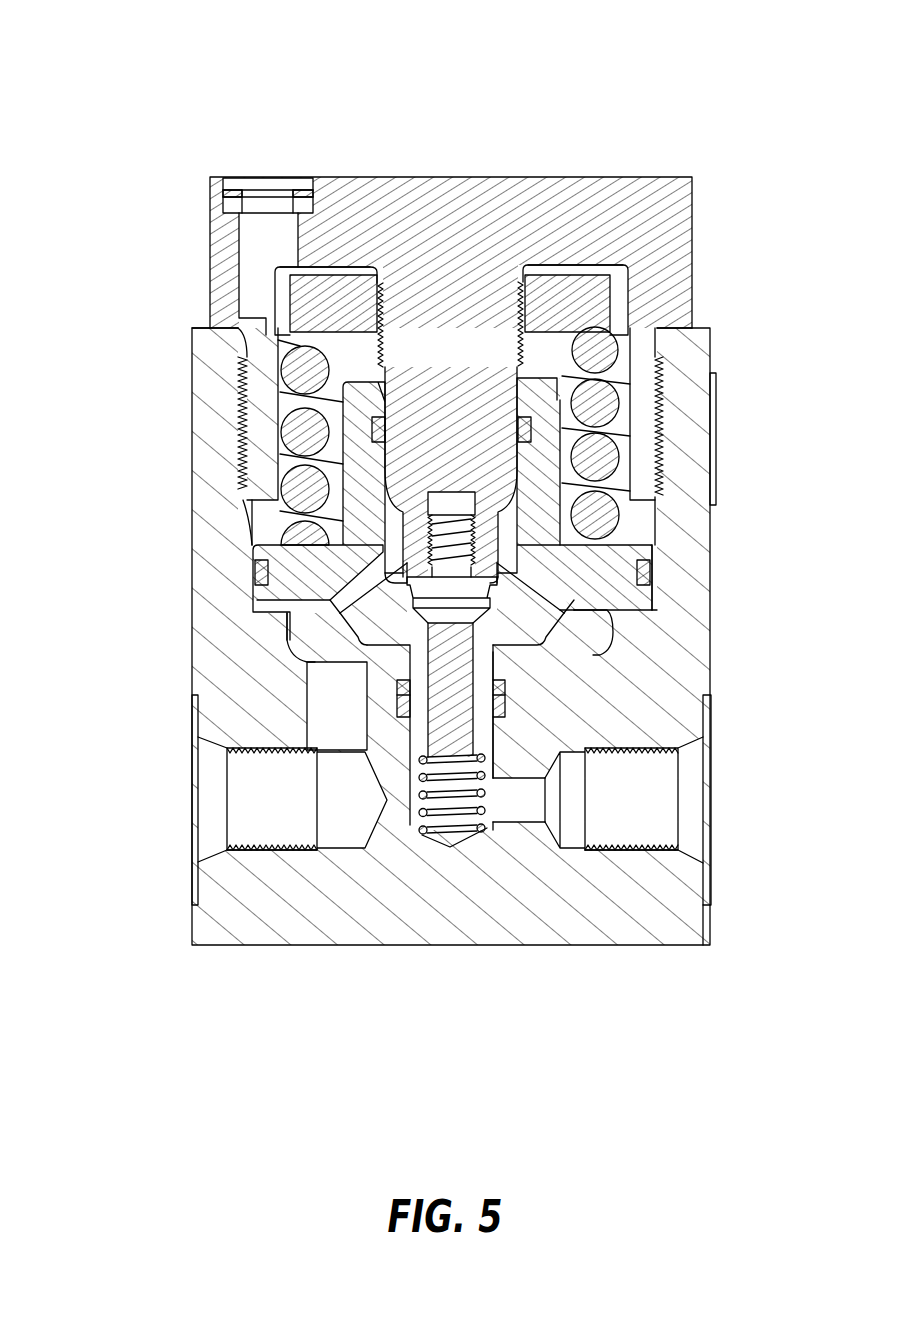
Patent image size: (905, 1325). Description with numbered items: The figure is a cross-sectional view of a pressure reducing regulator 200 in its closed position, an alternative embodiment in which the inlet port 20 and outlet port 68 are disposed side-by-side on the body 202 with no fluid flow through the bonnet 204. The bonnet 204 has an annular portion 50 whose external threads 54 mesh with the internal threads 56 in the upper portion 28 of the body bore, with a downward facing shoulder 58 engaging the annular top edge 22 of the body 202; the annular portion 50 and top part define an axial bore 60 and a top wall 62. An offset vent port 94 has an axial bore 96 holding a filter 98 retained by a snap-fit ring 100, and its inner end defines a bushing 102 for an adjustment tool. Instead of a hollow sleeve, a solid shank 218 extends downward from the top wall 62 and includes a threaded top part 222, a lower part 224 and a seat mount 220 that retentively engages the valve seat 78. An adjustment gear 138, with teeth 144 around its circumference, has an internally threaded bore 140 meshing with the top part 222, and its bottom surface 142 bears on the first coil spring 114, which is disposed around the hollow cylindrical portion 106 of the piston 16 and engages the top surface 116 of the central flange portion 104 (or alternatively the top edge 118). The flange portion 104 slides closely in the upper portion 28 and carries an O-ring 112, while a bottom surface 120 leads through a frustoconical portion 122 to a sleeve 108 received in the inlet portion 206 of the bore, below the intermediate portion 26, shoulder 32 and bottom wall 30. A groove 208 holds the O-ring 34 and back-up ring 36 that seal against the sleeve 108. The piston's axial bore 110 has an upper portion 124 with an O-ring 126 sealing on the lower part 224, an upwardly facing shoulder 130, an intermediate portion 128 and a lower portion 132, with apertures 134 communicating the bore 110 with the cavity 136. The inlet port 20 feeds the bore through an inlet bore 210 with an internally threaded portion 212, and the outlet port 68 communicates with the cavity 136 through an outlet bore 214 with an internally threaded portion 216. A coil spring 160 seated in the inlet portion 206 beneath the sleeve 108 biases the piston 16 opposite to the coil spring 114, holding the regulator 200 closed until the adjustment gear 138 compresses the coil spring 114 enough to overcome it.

The pressure reducing regulator 200 is at (746, 103).
The bonnet 204 is at (437, 198).
The annular top edge 22 is at (708, 325).
The inlet port 20 is at (712, 835).
The body 202 is at (714, 922).
The outlet port 68 is at (195, 838).
The external threads 54 is at (690, 430).
The snap-fit ring 100 is at (233, 190).
The filter 98 is at (265, 204).
The axial bore 96 is at (298, 252).
The vent port 94 is at (303, 190).
The internally threaded bore 140 is at (362, 268).
The bushing 102 is at (345, 300).
The top part 222 is at (312, 320).
The bottom surface 142 is at (262, 342).
The adjustment gear 138 is at (557, 290).
The teeth 144 is at (620, 287).
The top wall 62 is at (540, 258).
The solid shank 218 is at (453, 330).
The coil spring 160 is at (438, 812).
The lower portion 132 is at (462, 745).
The inlet portion 206 is at (417, 790).
The back-up ring 36 is at (392, 720).
The sleeve 108 is at (503, 725).
The O-ring 34 is at (535, 725).
The axial bore 60 is at (262, 392).
The annular portion 50 is at (278, 407).
The lower part 224 is at (250, 418).
The top edge 118 is at (245, 360).
The O-ring 126 is at (285, 446).
The downward facing shoulder 58 is at (690, 347).
The internal threads 56 is at (690, 400).
The first coil spring 114 is at (690, 290).
The upper portion 28 is at (690, 517).
The hollow cylindrical portion 106 is at (622, 470).
The piston 16 is at (300, 545).
The axial bore 110 is at (335, 503).
The upper portion 124 is at (268, 515).
The seat mount 220 is at (258, 560).
The O-ring 112 is at (262, 582).
The top surface 116 is at (655, 545).
The central flange portion 104 is at (655, 565).
The valve seat 78 is at (690, 600).
The intermediate portion 26 is at (330, 635).
The apertures 134 is at (345, 618).
The upwardly facing shoulder 130 is at (360, 640).
The cavity 136 is at (300, 720).
The intermediate portion 128 is at (340, 748).
The shoulder 32 is at (690, 640).
The bottom surface 120 is at (655, 665).
The frustoconical portion 122 is at (540, 690).
The bottom wall 30 is at (580, 722).
The groove 208 is at (515, 702).
The outlet bore 214 is at (232, 792).
The internally threaded portion 216 is at (265, 848).
The inlet bore 210 is at (665, 792).
The internally threaded portion 212 is at (595, 846).